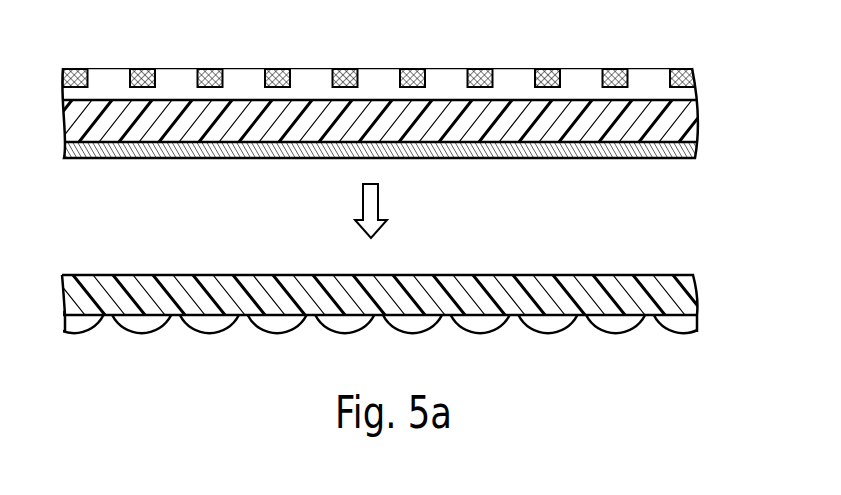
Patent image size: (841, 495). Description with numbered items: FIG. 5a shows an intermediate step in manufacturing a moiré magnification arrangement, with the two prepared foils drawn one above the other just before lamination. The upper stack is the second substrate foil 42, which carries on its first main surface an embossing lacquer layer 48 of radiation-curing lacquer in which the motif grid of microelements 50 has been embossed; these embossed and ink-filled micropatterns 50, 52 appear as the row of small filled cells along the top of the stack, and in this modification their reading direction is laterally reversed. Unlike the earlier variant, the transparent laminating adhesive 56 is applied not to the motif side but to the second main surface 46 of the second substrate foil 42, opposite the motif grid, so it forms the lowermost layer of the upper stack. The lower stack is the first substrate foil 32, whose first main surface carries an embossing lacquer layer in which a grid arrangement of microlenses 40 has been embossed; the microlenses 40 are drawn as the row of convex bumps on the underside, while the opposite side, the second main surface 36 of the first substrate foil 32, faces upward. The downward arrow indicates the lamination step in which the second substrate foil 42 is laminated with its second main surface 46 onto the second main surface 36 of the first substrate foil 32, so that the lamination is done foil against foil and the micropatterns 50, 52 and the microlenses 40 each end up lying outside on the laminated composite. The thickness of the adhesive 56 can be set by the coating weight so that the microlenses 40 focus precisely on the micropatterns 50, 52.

The first substrate foil 32 is at (672, 295).
The second main surface of the first substrate foil 36 is at (399, 275).
The microlenses 40 is at (680, 325).
The second substrate foil 42 is at (676, 122).
The second main surface of the second substrate foil 46 is at (419, 139).
The embossing lacquer layer 48 is at (682, 93).
The microelements 50 is at (432, 64).
The micropatterns 52 is at (690, 75).
The transparent laminating adhesive 56 is at (690, 150).